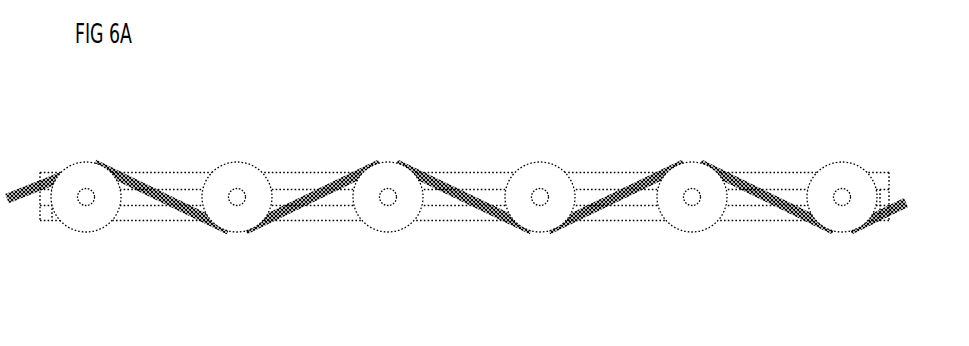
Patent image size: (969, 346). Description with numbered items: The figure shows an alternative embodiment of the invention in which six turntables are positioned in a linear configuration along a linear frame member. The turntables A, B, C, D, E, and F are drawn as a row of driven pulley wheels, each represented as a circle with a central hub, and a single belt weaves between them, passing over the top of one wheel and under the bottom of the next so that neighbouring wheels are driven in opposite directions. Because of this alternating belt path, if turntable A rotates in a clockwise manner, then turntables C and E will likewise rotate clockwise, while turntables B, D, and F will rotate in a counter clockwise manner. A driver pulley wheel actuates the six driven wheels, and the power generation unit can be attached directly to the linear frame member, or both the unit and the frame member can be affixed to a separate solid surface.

The turntable A is at (86, 231).
The turntable B is at (237, 230).
The turntable C is at (388, 229).
The turntable D is at (540, 229).
The turntable E is at (692, 227).
The turntable F is at (842, 226).